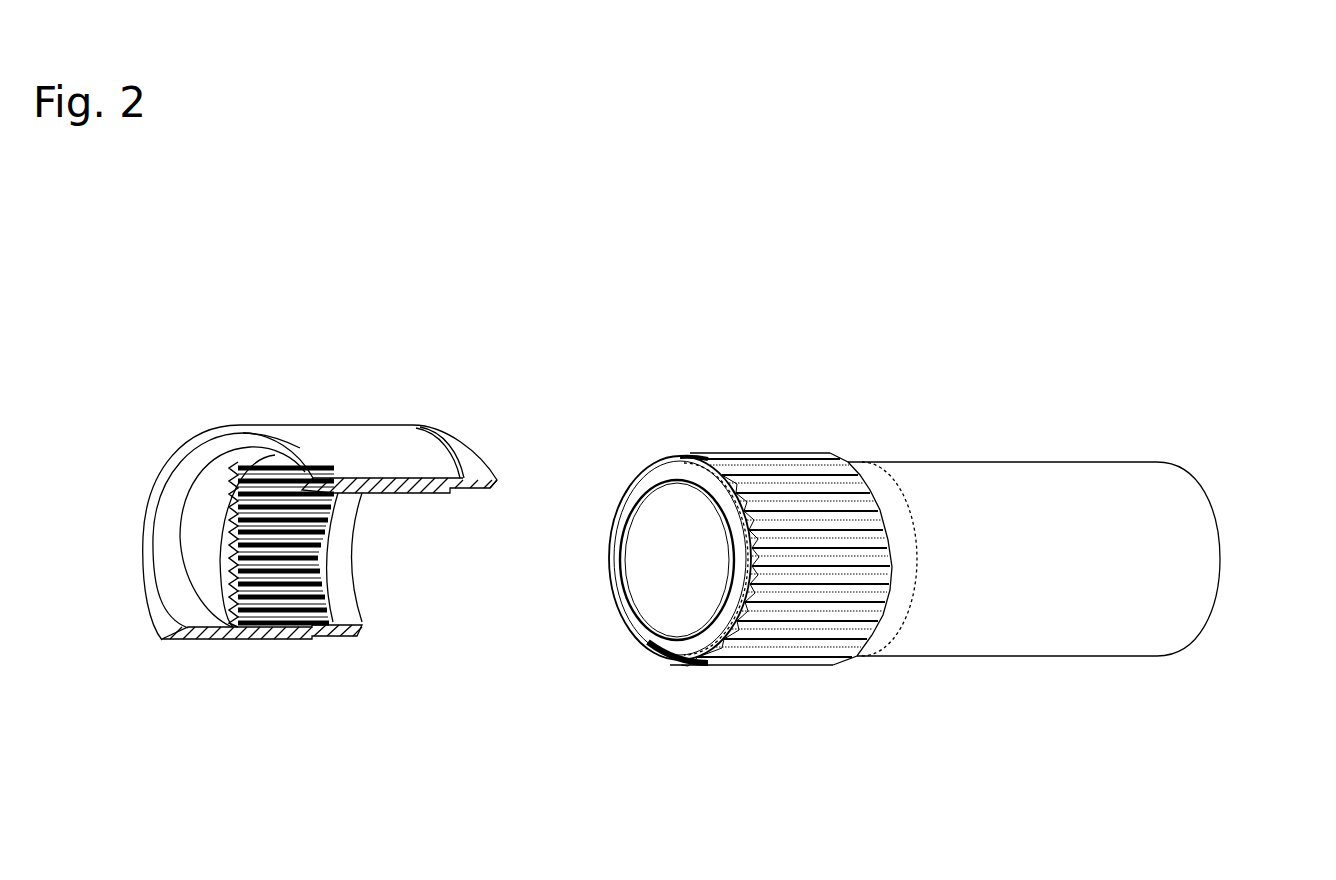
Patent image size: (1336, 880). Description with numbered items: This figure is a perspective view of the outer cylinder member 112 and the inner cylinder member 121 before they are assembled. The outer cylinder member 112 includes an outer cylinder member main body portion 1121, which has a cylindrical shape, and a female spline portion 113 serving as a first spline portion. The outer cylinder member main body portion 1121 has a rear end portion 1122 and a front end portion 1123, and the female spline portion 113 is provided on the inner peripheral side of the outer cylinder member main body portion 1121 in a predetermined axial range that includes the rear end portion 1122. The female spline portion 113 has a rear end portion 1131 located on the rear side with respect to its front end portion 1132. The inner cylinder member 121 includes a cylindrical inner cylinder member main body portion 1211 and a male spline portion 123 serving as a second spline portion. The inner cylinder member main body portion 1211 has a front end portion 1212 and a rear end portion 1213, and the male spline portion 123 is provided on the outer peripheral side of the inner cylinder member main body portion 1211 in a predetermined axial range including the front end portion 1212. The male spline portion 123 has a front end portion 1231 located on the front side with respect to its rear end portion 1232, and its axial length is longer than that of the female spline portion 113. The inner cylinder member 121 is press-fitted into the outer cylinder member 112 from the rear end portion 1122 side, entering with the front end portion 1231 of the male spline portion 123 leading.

The outer cylinder member 112 is at (333, 416).
The outer cylinder member main body portion 1121 is at (373, 436).
The rear end portion 1122 is at (476, 463).
The front end portion 1123 is at (153, 507).
The female spline portion 113 is at (281, 604).
The rear end portion of the female spline portion 1131 is at (348, 630).
The front end portion of the female spline portion 1132 is at (233, 618).
The inner cylinder member 121 is at (1034, 450).
The inner cylinder member main body portion 1211 is at (942, 487).
The front end portion 1212 is at (672, 643).
The rear end portion 1213 is at (1205, 537).
The male spline portion 123 is at (783, 467).
The front end portion of the male spline portion 1231 is at (700, 453).
The rear end portion of the male spline portion 1232 is at (886, 602).